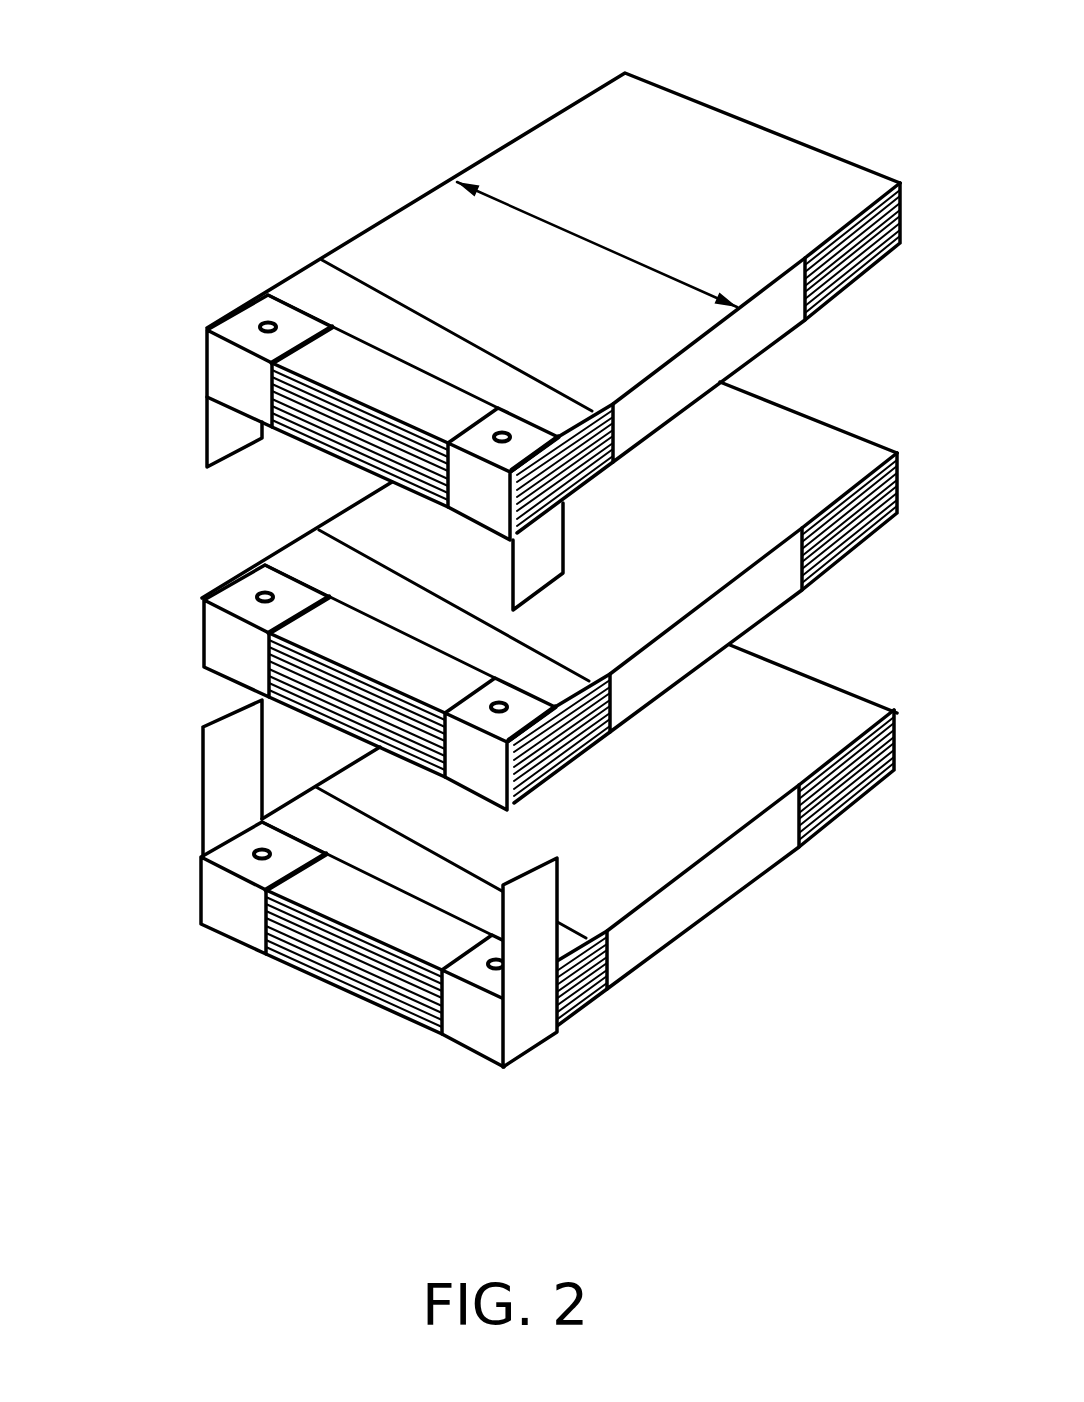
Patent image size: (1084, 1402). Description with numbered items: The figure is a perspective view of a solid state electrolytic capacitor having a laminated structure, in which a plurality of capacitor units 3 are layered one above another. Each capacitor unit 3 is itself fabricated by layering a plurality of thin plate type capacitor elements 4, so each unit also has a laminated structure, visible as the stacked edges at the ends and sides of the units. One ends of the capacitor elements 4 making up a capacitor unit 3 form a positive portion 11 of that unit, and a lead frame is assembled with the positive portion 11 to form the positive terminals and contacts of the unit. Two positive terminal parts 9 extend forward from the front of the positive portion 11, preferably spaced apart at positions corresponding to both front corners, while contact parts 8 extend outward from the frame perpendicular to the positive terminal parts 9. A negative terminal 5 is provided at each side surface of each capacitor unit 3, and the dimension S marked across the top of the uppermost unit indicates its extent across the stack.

The capacitor unit 3 is at (813, 160).
The capacitor element 4 is at (333, 423).
The negative terminal 5 is at (773, 328).
The contact part 8 is at (203, 433).
The positive terminal part 9 is at (233, 362).
The positive portion 11 is at (325, 982).
The module width S is at (572, 232).